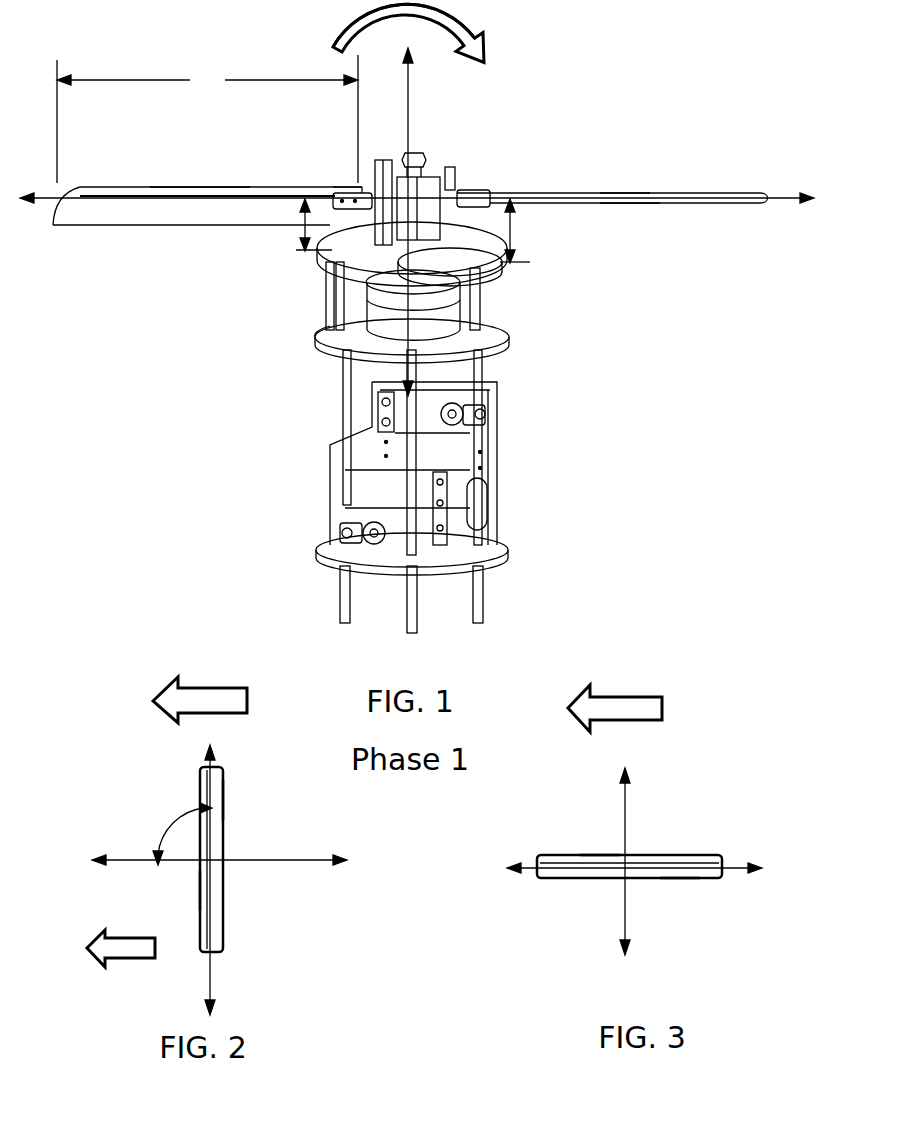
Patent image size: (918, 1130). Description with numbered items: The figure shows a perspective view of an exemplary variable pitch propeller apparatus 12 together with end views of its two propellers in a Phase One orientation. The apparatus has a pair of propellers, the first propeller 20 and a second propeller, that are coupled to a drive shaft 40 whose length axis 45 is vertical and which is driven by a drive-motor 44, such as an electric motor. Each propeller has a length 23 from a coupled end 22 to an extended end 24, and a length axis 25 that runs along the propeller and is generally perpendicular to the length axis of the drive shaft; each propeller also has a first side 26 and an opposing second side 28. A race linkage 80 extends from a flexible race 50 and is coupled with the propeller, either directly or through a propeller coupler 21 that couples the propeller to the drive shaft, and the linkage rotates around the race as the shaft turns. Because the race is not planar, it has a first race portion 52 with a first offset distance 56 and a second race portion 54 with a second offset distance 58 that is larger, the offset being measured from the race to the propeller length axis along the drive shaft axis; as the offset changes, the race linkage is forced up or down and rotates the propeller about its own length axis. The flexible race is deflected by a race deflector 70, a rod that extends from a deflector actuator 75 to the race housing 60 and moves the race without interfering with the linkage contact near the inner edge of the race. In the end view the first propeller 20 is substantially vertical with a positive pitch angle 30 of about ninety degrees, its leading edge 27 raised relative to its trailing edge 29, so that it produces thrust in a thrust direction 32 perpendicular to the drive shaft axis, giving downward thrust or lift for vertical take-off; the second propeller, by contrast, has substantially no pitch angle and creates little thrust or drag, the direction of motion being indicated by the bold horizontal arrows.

In FIG. 1, the variable pitch propeller apparatus 12 is at (457, 128).
In FIG. 1, the first propeller 20 is at (132, 190).
In FIG. 2, the first propeller 20 is at (223, 832).
In FIG. 1, the propeller coupler 21 is at (362, 196).
In FIG. 1, the coupled end 22 is at (365, 198).
In FIG. 1, the length 23 is at (207, 119).
In FIG. 1, the extended end 24 is at (80, 188).
In FIG. 1, the length axis 25 is at (173, 190).
In FIG. 1, the first side 26 is at (219, 190).
In FIG. 2, the first side 26 is at (222, 790).
In FIG. 2, the leading edge 27 is at (200, 768).
In FIG. 1, the second side 28 is at (205, 228).
In FIG. 2, the second side 28 is at (200, 888).
In FIG. 2, the trailing edge 29 is at (225, 952).
In FIG. 2, the positive pitch angle 30 is at (160, 822).
In FIG. 2, the thrust direction 32 is at (130, 960).
In FIG. 1, the drive shaft 40 is at (457, 192).
In FIG. 1, the drive-motor 44 is at (440, 303).
In FIG. 1, the length axis 45 is at (412, 78).
In FIG. 1, the flexible race 50 is at (322, 335).
In FIG. 1, the first race portion 52 is at (346, 248).
In FIG. 1, the second race portion 54 is at (470, 292).
In FIG. 1, the first offset distance 56 is at (304, 228).
In FIG. 1, the second offset distance 58 is at (515, 232).
In FIG. 1, the race housing 60 is at (497, 278).
In FIG. 1, the race deflector 70 is at (490, 340).
In FIG. 1, the deflector actuator 75 is at (345, 528).
In FIG. 1, the race linkage 80 is at (395, 178).